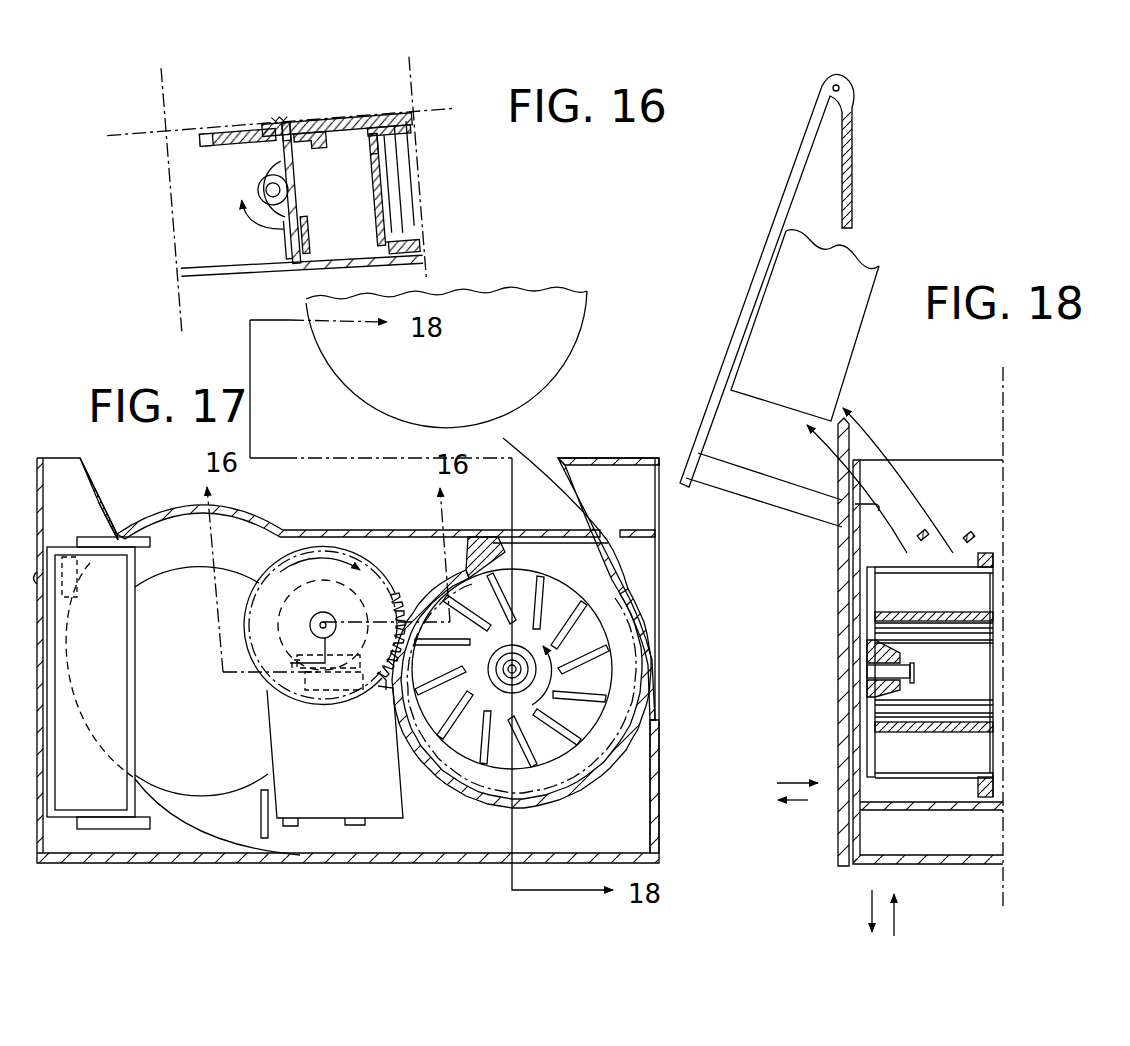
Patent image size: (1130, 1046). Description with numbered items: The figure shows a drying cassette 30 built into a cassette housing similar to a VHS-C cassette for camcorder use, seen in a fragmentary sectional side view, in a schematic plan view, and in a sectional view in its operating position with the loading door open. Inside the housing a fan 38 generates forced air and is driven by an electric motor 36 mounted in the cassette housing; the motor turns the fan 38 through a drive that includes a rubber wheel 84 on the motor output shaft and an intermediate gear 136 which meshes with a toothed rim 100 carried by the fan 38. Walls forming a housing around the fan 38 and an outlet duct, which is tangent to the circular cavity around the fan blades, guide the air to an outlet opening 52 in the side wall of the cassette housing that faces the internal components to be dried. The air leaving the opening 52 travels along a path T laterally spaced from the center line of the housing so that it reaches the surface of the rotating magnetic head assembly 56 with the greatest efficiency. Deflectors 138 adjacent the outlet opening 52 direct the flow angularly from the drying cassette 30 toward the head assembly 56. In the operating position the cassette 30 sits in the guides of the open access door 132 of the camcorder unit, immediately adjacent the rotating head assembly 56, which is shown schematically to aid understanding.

In FIG. 17, the drying cassette 30 is at (604, 443).
In FIG. 18, the drying cassette 30 is at (992, 512).
In FIG. 17, the motor 36 is at (374, 782).
In FIG. 17, the fan 38 is at (608, 665).
In FIG. 18, the fan 38 is at (977, 601).
In FIG. 17, the outlet opening 52 is at (492, 540).
In FIG. 18, the outlet opening 52 is at (876, 532).
In FIG. 17, the rotating magnetic head assembly 56 is at (573, 350).
In FIG. 18, the rotating magnetic head assembly 56 is at (851, 322).
In FIG. 17, the rubber wheel 84 is at (306, 651).
In FIG. 16, the toothed rim 100 is at (393, 142).
In FIG. 17, the toothed rim 100 is at (336, 625).
In FIG. 18, the access door 132 is at (742, 300).
In FIG. 16, the intermediate gear 136 is at (334, 138).
In FIG. 17, the intermediate gear 136 is at (385, 683).
In FIG. 18, the deflectors 138 is at (971, 532).
In FIG. 18, the path T is at (876, 431).